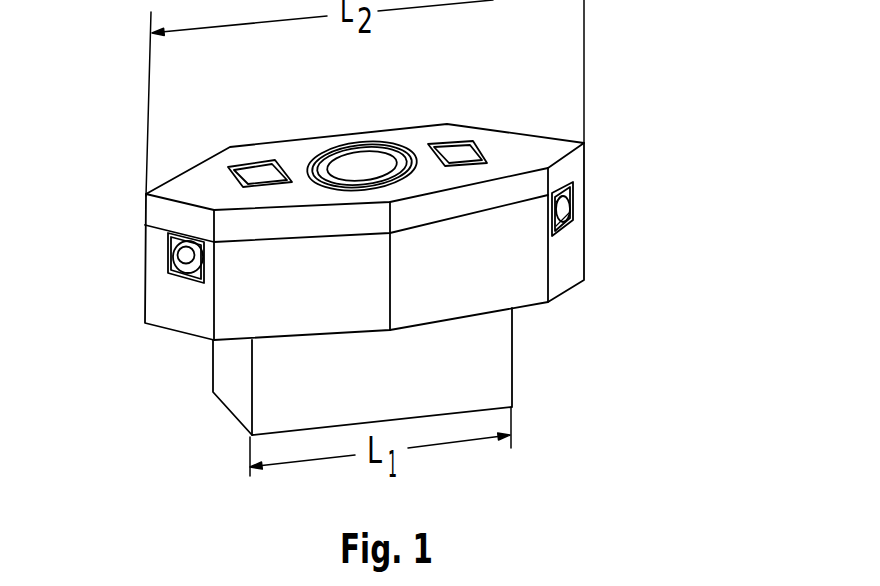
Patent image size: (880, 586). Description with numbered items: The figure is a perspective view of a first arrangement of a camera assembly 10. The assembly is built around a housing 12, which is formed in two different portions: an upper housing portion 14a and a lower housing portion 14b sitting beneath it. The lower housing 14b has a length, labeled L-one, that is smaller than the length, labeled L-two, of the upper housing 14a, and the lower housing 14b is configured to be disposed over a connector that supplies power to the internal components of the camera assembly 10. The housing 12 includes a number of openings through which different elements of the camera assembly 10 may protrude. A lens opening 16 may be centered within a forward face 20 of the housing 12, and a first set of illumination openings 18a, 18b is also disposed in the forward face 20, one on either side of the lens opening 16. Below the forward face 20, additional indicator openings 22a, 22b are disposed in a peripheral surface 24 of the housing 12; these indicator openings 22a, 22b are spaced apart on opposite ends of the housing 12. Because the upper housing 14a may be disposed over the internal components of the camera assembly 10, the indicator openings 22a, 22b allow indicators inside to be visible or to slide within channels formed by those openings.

The camera assembly 10 is at (610, 138).
The housing 12 is at (596, 246).
The upper housing portion 14a is at (573, 197).
The lower housing portion 14b is at (497, 364).
The lens opening 16 is at (380, 118).
The illumination opening 18a is at (250, 141).
The illumination opening 18b is at (478, 122).
The forward face 20 is at (305, 152).
The indicator opening 22a is at (156, 273).
The indicator opening 22b is at (596, 210).
The peripheral surface 24 is at (558, 262).